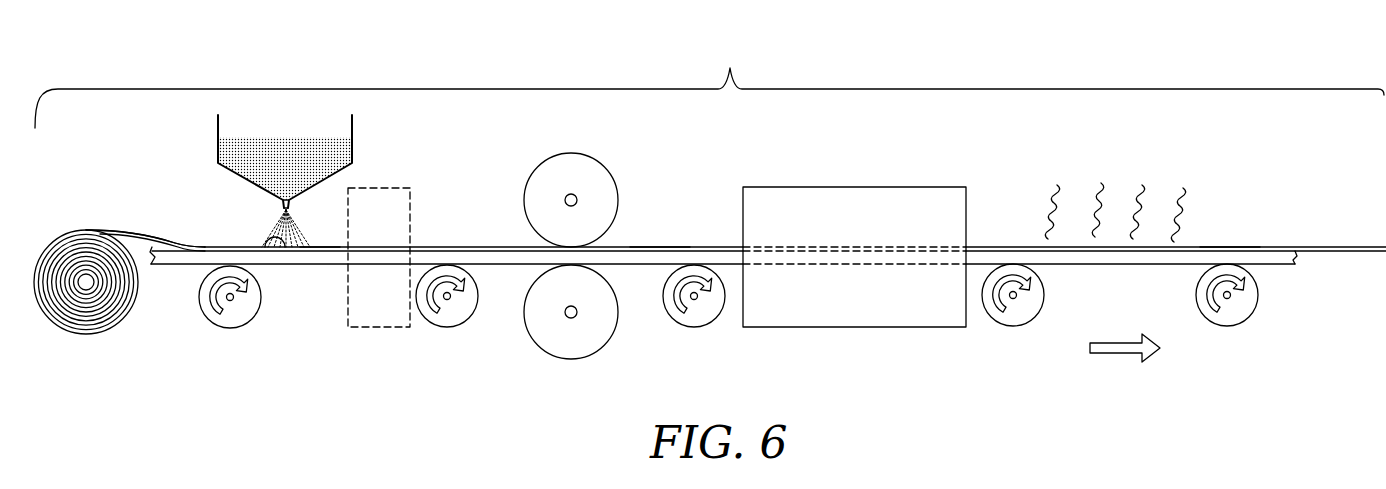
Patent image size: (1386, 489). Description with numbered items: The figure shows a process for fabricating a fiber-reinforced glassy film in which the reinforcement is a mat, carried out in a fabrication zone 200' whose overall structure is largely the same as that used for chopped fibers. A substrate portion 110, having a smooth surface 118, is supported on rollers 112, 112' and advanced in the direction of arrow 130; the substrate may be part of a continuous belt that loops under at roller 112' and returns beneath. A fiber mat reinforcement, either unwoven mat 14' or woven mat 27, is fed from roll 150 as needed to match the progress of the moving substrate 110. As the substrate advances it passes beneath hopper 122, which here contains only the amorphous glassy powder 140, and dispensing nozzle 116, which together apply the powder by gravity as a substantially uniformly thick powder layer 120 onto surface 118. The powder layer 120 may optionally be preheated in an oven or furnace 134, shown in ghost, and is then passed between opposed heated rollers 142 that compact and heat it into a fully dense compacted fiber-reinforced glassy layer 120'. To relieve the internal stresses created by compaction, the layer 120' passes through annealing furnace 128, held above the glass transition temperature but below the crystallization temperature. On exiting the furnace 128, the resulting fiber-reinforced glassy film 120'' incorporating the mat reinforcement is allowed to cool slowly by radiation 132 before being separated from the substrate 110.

The fabrication zone 200' is at (709, 73).
The unwoven fiber mat reinforcement 14' is at (139, 184).
The woven fiber mat reinforcement 27 is at (145, 238).
The roll 150 is at (86, 334).
The substrate portion 110 is at (197, 258).
The rollers 112 is at (626, 334).
The roller 112' is at (1268, 317).
The hopper 122 is at (322, 135).
The glassy powder 140 is at (279, 137).
The dispensing nozzle 116 is at (283, 207).
The smooth surface 118 is at (285, 248).
The powder layer 120 is at (362, 199).
The oven or furnace 134 is at (380, 327).
The heated rollers 142 is at (605, 168).
The compacted fiber-reinforced glassy layer 120' is at (677, 209).
The annealing furnace 128 is at (940, 187).
The radiation 132 is at (1143, 188).
The fiber-reinforced glassy film 120'' is at (1245, 209).
The arrow 130 is at (1142, 335).